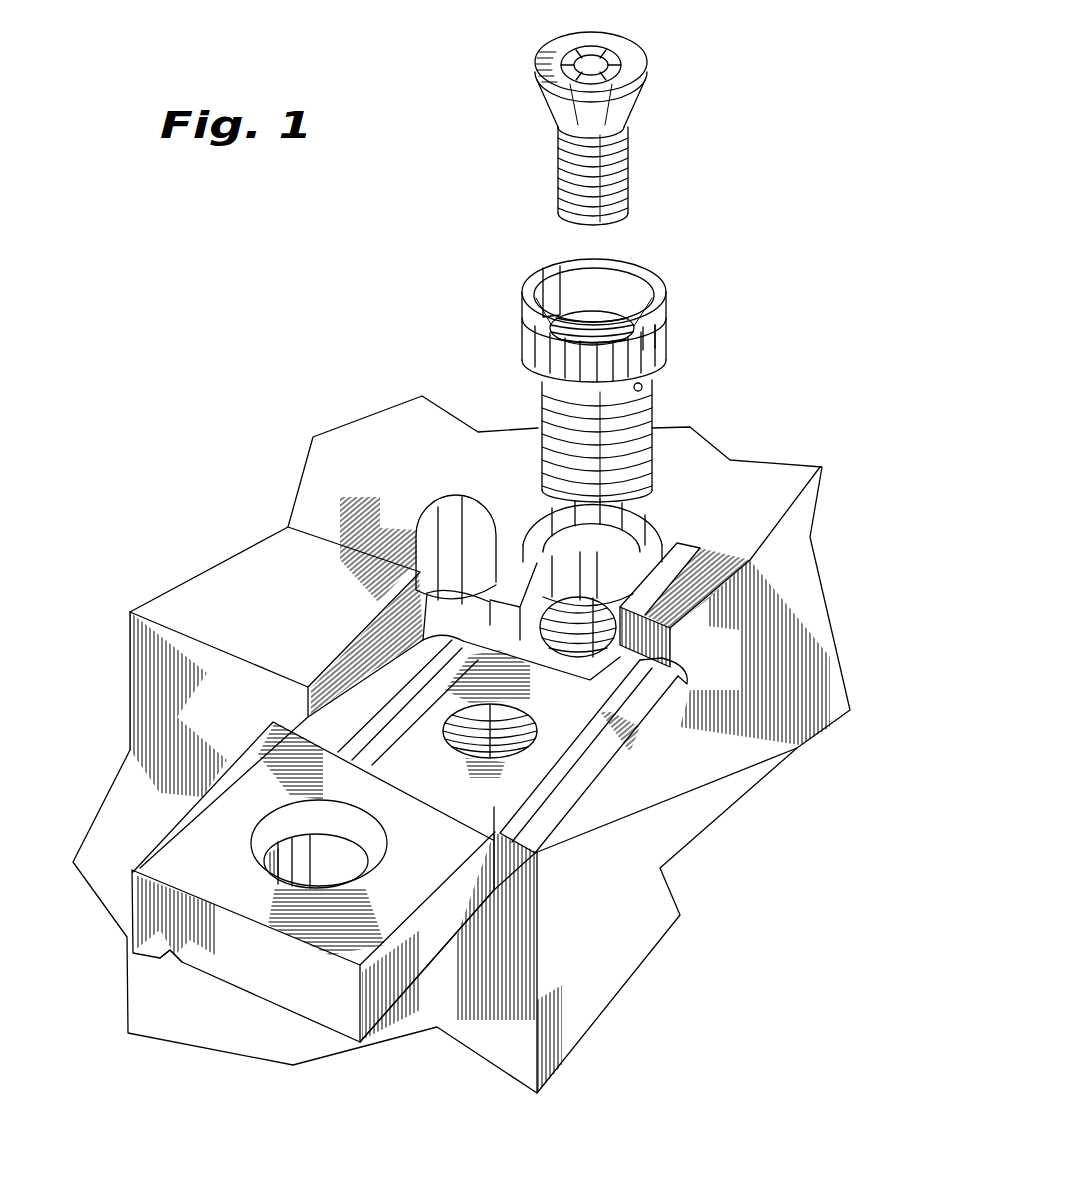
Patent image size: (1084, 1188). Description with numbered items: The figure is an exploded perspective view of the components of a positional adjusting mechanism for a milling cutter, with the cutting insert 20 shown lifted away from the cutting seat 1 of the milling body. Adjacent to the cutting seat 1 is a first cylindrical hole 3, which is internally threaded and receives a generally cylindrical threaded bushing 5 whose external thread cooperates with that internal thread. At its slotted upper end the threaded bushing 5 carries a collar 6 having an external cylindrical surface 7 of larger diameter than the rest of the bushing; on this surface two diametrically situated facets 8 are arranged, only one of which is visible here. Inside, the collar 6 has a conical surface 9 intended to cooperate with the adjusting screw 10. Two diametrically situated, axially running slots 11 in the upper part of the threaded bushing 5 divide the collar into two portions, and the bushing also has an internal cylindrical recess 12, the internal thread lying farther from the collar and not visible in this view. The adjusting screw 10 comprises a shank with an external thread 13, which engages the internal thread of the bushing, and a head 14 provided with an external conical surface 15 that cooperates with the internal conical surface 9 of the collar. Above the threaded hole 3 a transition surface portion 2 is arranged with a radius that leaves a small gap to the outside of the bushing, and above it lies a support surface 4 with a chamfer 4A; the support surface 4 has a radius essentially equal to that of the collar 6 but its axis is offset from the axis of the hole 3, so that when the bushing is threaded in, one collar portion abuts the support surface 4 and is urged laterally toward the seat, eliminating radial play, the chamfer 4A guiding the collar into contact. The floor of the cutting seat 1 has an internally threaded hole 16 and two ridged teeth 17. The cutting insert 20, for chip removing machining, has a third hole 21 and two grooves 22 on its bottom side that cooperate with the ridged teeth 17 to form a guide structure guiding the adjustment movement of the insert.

The cutting seat 1 is at (470, 748).
The transition surface portion 2 is at (603, 523).
The first cylindrical hole 3 is at (533, 741).
The support surface 4 is at (614, 576).
The chamfer 4A is at (495, 505).
The threaded bushing 5 is at (617, 353).
The collar 6 is at (657, 302).
The external cylindrical surface 7 is at (605, 362).
The facets 8 is at (562, 355).
The conical surface 9 is at (620, 286).
The adjusting screw 10 is at (602, 125).
The slots 11 is at (545, 272).
The internal cylindrical recess 12 is at (575, 263).
The external thread 13 is at (623, 182).
The head 14 is at (637, 72).
The external conical surface 15 is at (558, 107).
The hole 16 is at (527, 775).
The ridged teeth 17 is at (533, 823).
The cutting insert 20 is at (440, 983).
The third hole 21 is at (293, 860).
The grooves 22 is at (168, 957).